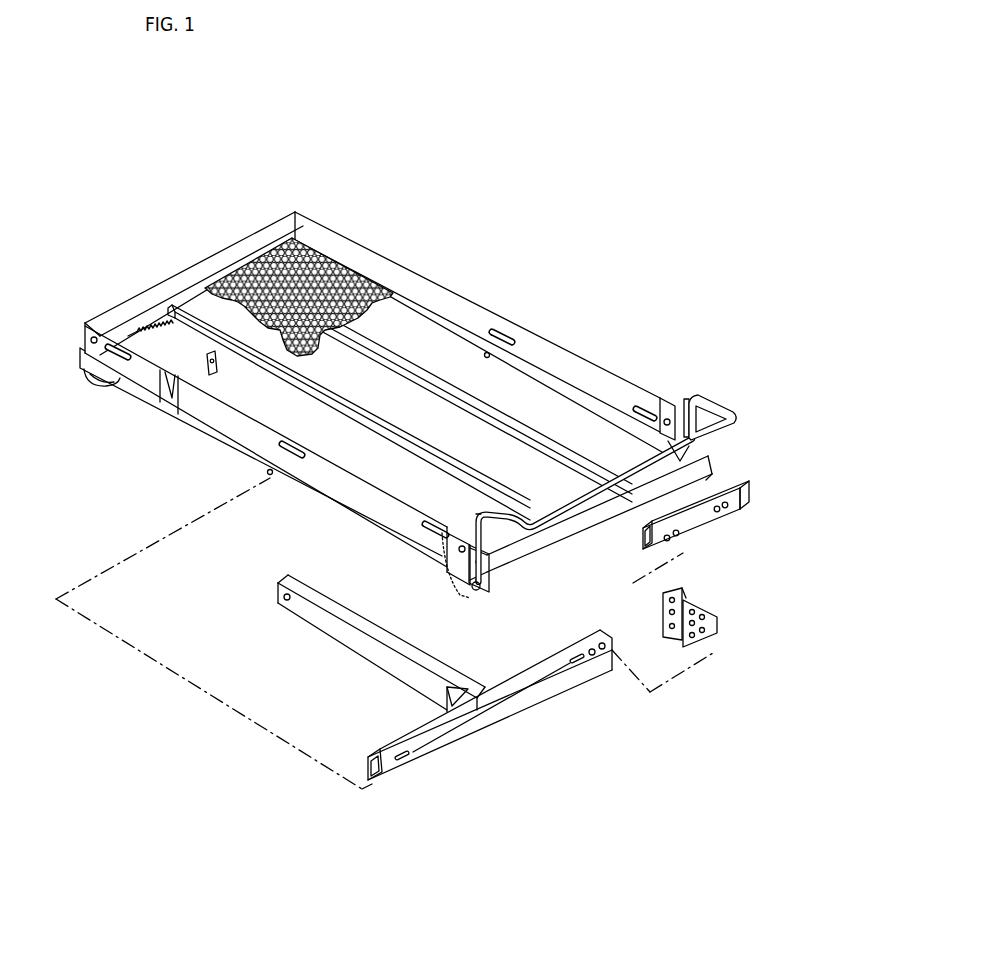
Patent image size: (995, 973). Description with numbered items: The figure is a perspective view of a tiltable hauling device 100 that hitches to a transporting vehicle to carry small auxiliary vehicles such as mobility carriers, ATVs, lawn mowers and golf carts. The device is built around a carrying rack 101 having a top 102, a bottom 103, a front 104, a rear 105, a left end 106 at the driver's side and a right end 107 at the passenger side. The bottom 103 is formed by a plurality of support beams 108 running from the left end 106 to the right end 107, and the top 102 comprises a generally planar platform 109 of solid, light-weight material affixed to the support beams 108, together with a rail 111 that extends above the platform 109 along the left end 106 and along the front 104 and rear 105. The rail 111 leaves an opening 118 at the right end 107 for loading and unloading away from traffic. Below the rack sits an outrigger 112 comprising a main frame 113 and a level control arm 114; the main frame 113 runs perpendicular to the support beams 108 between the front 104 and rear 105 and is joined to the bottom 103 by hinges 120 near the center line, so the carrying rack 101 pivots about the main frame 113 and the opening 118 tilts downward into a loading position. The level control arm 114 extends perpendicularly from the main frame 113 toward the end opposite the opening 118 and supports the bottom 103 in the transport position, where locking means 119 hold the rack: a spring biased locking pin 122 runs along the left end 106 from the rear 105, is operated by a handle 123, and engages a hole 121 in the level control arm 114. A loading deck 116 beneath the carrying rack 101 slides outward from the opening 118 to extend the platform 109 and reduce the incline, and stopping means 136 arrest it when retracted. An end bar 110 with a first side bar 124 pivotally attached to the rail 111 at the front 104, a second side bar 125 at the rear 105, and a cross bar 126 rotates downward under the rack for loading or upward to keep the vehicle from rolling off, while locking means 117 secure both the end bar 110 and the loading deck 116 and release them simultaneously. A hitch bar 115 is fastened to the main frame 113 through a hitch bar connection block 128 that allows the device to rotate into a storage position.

The tiltable hauling device 100 is at (414, 35).
The carrying rack 101 is at (311, 199).
The top 102 is at (538, 393).
The bottom 103 is at (310, 491).
The front 104 is at (430, 283).
The rear 105 is at (366, 519).
The left end 106 is at (182, 270).
The right end 107 is at (494, 566).
The support beams 108 is at (463, 395).
The platform 109 is at (314, 247).
The end bar 110 is at (717, 400).
The rail 111 is at (603, 382).
The outrigger 112 is at (377, 644).
The main frame 113 is at (415, 769).
The level control arm 114 is at (312, 588).
The hitch bar 115 is at (743, 504).
The loading deck 116 is at (714, 472).
The locking means 117 is at (468, 583).
The opening 118 is at (684, 455).
The locking means 119 is at (82, 365).
The hinges 120 is at (416, 752).
The hole 121 is at (279, 602).
The spring biased locking pin 122 is at (153, 330).
The handle 123 is at (92, 376).
The first side bar 124 is at (688, 401).
The second side bar 125 is at (475, 512).
The cross bar 126 is at (731, 415).
The hitch bar connection block 128 is at (719, 616).
The stopping means 136 is at (216, 371).